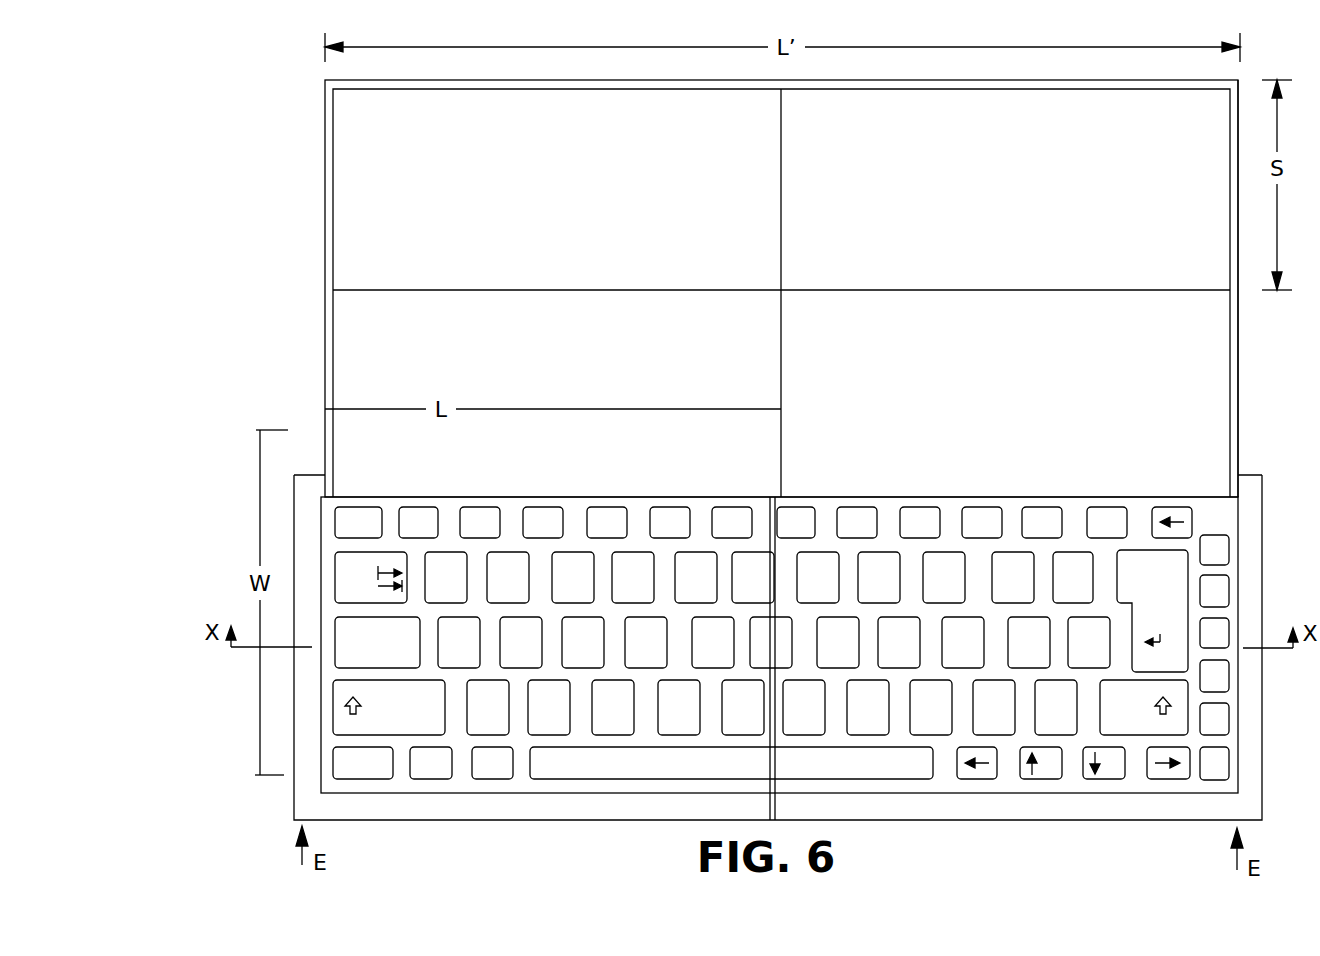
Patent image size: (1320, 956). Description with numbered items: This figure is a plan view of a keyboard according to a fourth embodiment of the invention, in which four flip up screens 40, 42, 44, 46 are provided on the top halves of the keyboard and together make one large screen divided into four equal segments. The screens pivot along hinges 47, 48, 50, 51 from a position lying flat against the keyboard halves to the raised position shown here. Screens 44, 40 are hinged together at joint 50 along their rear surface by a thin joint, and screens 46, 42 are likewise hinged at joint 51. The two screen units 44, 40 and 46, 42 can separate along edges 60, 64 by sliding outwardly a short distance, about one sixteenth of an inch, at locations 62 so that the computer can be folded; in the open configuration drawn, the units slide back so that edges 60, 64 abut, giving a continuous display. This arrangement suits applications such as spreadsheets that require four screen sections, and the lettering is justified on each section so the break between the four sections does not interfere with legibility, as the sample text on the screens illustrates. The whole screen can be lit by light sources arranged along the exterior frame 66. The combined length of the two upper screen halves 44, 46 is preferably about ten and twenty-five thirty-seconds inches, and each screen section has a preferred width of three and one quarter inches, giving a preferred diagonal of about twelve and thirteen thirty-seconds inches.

The flip up screen 40 is at (552, 393).
The flip up screen 42 is at (1011, 393).
The flip up screen 44 is at (557, 189).
The flip up screen 46 is at (1005, 189).
The hinge 47 is at (490, 497).
The hinge 48 is at (915, 497).
The joint 50 is at (332, 290).
The joint 51 is at (1238, 290).
The edge 60 is at (782, 147).
The location 62 is at (690, 583).
The edge 64 is at (780, 180).
The exterior frame 66 is at (320, 312).